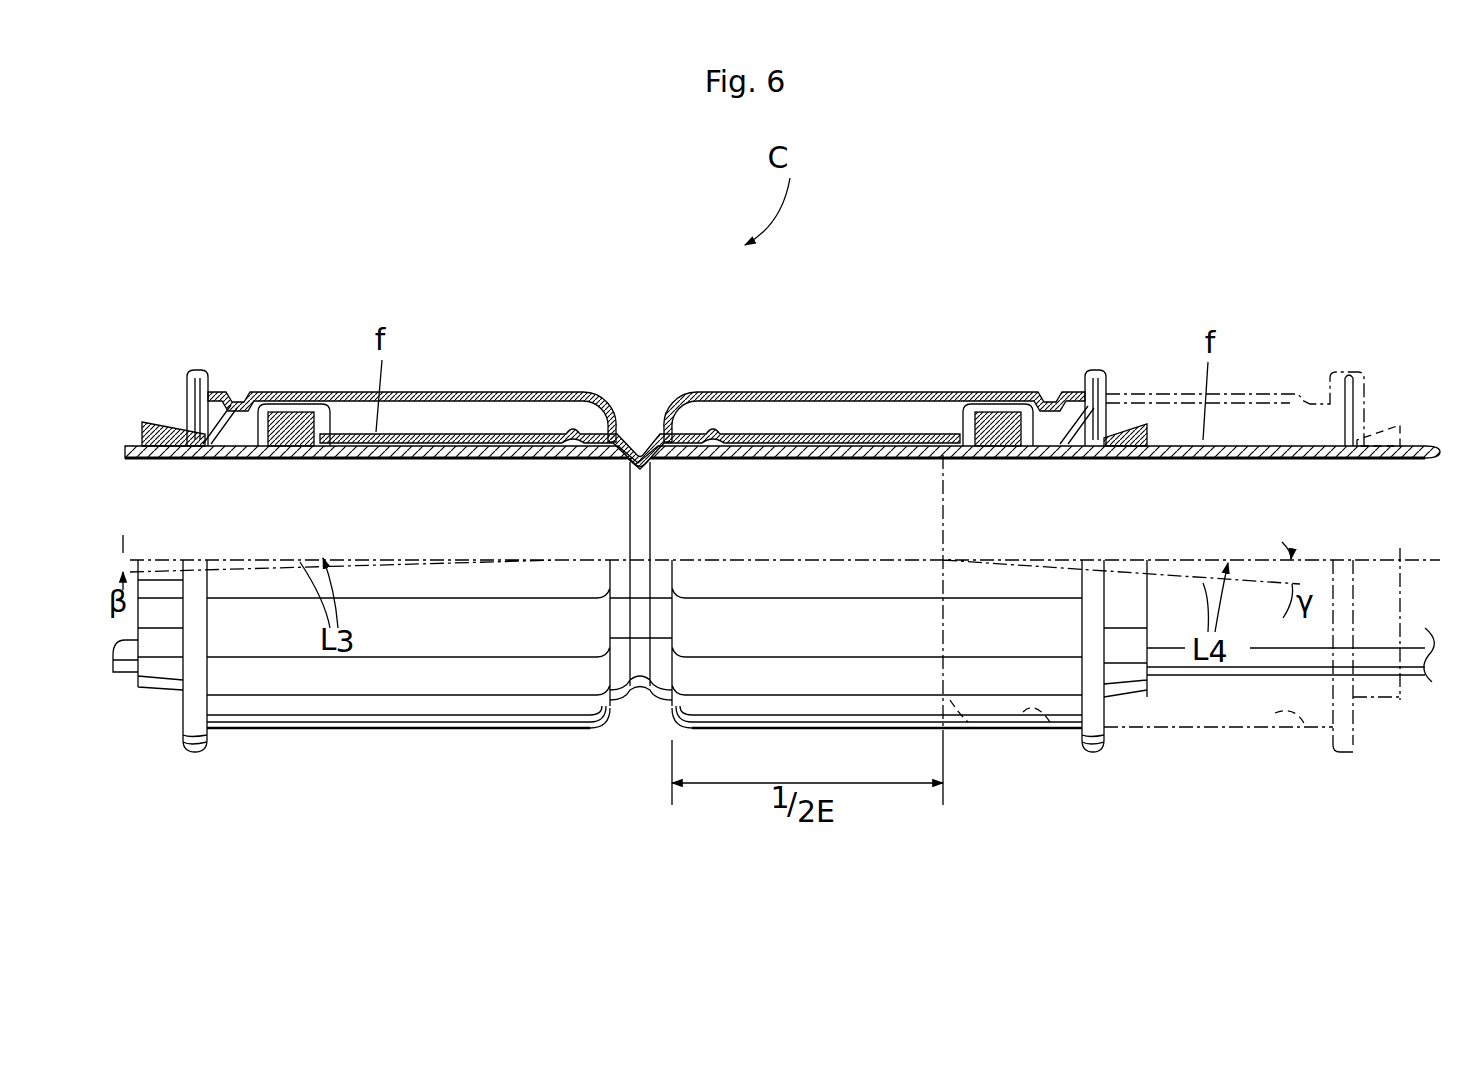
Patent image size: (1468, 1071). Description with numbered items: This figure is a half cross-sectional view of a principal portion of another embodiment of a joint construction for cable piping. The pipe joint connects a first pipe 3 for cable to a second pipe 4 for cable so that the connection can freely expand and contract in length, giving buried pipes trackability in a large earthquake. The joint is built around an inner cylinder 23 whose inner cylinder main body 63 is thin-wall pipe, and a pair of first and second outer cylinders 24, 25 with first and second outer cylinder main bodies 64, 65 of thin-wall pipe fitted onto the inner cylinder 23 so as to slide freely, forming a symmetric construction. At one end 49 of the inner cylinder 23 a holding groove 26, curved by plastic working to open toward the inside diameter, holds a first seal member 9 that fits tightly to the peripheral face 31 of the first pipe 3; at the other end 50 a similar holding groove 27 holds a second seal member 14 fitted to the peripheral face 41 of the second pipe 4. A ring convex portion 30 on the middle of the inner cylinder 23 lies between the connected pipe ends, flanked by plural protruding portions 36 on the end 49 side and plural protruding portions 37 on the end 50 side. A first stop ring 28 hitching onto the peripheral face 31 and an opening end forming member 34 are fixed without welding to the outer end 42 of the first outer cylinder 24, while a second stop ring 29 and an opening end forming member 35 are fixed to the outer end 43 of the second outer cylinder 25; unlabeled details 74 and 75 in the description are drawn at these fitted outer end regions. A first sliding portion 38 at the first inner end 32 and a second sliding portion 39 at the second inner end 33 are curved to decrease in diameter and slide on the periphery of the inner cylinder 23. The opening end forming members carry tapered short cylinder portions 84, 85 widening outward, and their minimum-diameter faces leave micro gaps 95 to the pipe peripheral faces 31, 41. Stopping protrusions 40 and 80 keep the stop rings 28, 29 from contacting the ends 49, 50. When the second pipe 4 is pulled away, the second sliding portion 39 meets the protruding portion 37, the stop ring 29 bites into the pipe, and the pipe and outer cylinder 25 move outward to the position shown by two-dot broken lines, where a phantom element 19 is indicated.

The first pipe 3 is at (400, 437).
The second pipe 4 is at (1232, 440).
The first seal member 9 is at (298, 458).
The second seal member 14 is at (1004, 458).
The phantom member 19 is at (1023, 712).
The inner cylinder 23 is at (793, 423).
The first outer cylinder 24 is at (462, 392).
The second outer cylinder 25 is at (908, 390).
The holding groove 26 is at (290, 403).
The holding groove 27 is at (998, 405).
The first stop ring 28 is at (203, 458).
The second stop ring 29 is at (1080, 458).
The ring convex portion 30 is at (652, 470).
The peripheral face 31 is at (425, 435).
The first inner end 32 is at (598, 396).
The second inner end 33 is at (688, 402).
The opening end forming member 34 is at (172, 422).
The opening end forming member 35 is at (1112, 428).
The protruding portions 36 is at (568, 428).
The protruding portions 37 is at (722, 436).
The first sliding portion 38 is at (614, 418).
The second sliding portion 39 is at (660, 425).
The stopping protrusions 40 is at (244, 458).
The peripheral face 41 is at (1258, 442).
The outer end 42 is at (201, 368).
The outer end 43 is at (1091, 368).
The end 49 is at (248, 415).
The end 50 is at (1040, 410).
The inner cylinder main body 63 is at (860, 395).
The first outer cylinder main body 64 is at (500, 432).
The second outer cylinder main body 65 is at (955, 410).
The post tip 74 is at (180, 385).
The post tip 75 is at (1080, 428).
The stopping protrusions 80 is at (1038, 458).
The tapered short cylinder portion 84 is at (152, 426).
The tapered short cylinder portion 85 is at (1142, 423).
The micro gaps 95 is at (620, 425).